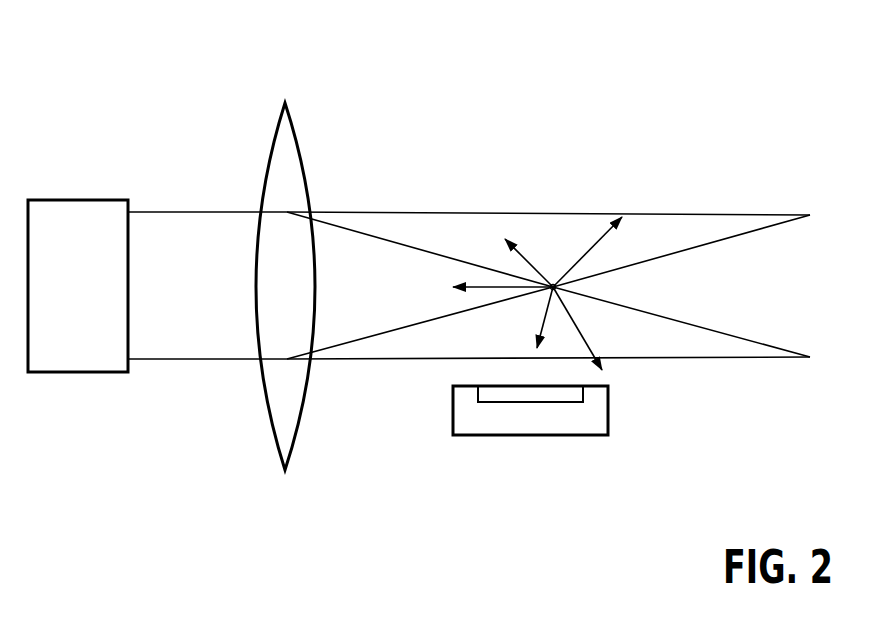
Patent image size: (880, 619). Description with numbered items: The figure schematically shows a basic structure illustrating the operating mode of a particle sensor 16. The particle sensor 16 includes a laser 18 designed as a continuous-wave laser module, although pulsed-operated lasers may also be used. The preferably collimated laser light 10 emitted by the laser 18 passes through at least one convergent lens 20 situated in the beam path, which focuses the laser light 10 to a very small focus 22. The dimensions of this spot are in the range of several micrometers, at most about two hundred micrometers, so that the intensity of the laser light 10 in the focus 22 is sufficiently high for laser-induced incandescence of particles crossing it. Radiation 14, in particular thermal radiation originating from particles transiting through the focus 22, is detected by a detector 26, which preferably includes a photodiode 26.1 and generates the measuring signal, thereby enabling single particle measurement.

The laser light 10 is at (185, 258).
The radiation 14 is at (493, 286).
The particle sensor 16 is at (518, 142).
The laser 18 is at (77, 373).
The convergent lens 20 is at (287, 166).
The focus 22 is at (552, 267).
The detector 26 is at (608, 410).
The photodiode 26.1 is at (530, 393).